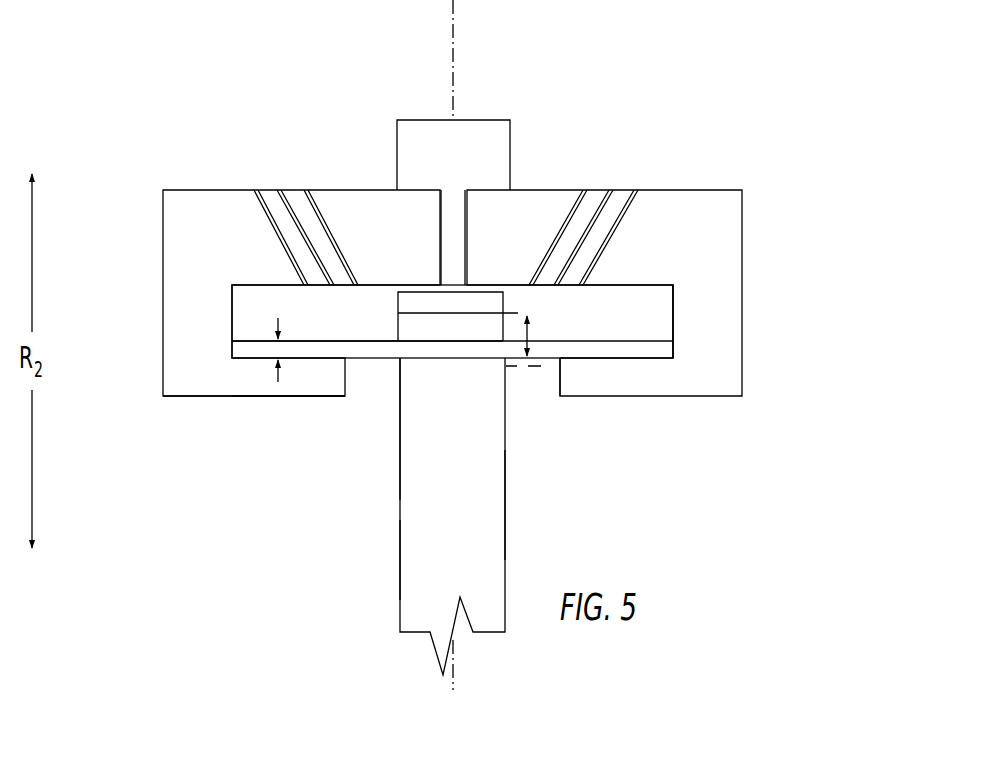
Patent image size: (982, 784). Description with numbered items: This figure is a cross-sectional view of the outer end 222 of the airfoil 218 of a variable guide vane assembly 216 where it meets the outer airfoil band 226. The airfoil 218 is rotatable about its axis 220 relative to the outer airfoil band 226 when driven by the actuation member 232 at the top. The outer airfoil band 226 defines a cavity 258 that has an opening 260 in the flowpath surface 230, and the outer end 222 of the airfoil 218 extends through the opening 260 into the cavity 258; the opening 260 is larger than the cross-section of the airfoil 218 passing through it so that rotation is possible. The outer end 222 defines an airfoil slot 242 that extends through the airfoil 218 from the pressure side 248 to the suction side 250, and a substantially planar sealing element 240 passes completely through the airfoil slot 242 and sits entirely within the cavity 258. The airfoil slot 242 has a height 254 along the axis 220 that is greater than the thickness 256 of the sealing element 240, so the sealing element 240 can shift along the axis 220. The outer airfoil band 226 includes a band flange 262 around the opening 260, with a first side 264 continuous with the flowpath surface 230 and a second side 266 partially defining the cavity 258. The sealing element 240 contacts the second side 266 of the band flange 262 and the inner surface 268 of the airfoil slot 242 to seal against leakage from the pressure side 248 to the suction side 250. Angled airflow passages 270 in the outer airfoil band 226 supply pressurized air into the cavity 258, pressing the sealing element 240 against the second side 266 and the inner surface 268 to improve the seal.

The variable guide vane assembly 216 is at (780, 203).
The airfoil 218 is at (492, 532).
The axis 220 is at (452, 40).
The outer end 222 is at (377, 430).
The outer airfoil band 226 is at (188, 298).
The flowpath surface 230 is at (192, 400).
The actuation member 232 is at (497, 142).
The sealing element 240 is at (655, 350).
The airfoil slot 242 is at (412, 330).
The pressure side 248 is at (538, 505).
The suction side 250 is at (362, 559).
The height 254 is at (530, 323).
The thickness 256 is at (278, 317).
The cavity 258 is at (639, 309).
The opening 260 is at (537, 395).
The band flange 262 is at (293, 388).
The first side 264 is at (322, 399).
The second side 266 is at (313, 347).
The inner surface 268 is at (474, 351).
The airflow passage 270 is at (297, 227).